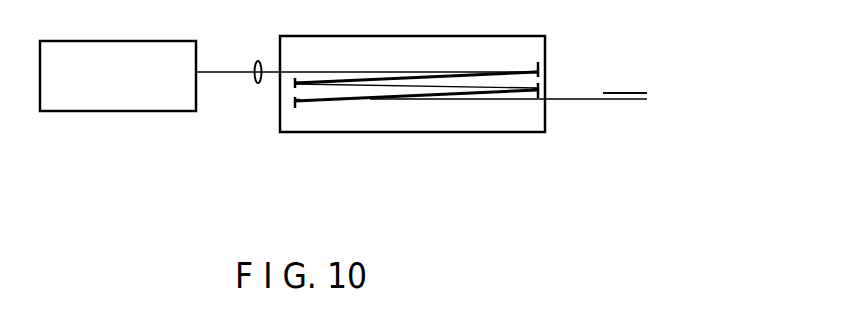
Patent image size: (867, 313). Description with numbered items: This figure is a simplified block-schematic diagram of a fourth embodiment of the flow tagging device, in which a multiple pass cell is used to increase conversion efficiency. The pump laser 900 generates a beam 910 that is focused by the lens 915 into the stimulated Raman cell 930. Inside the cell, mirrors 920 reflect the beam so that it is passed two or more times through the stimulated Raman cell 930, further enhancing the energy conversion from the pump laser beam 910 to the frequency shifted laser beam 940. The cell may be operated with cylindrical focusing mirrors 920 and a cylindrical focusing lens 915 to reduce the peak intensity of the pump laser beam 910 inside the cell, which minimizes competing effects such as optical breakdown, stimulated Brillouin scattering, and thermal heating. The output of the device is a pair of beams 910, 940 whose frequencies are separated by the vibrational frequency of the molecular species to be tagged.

The pump laser 900 is at (60, 112).
The pump laser beam 910 is at (210, 72).
The lens 915 is at (253, 83).
The mirrors 920 is at (296, 77).
The multiple pass stimulated Raman cell 930 is at (417, 133).
The frequency shifted laser beam 940 is at (645, 102).